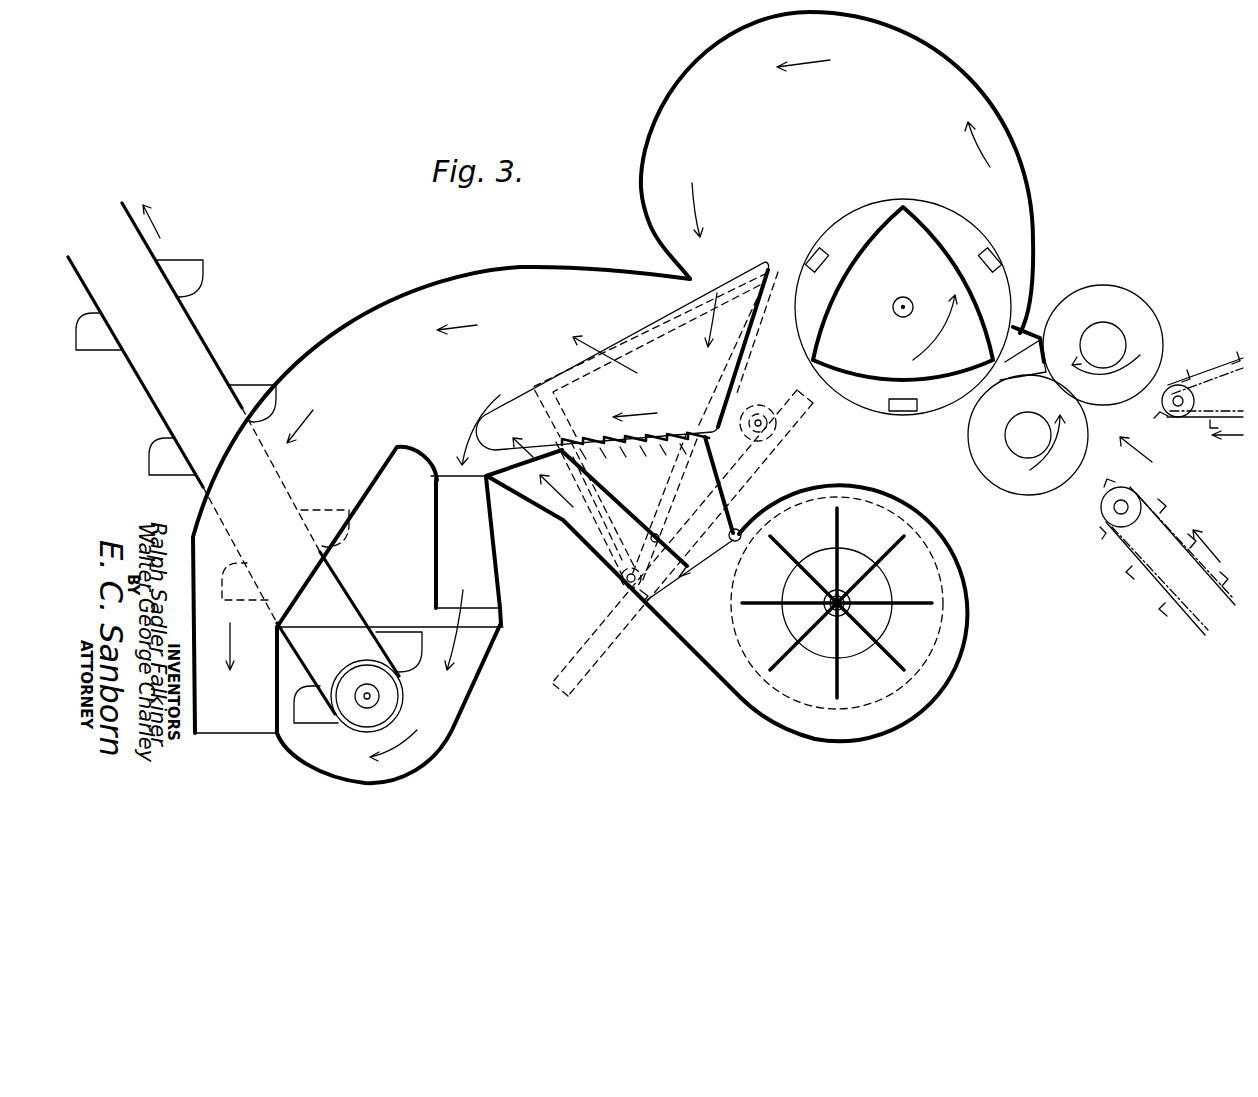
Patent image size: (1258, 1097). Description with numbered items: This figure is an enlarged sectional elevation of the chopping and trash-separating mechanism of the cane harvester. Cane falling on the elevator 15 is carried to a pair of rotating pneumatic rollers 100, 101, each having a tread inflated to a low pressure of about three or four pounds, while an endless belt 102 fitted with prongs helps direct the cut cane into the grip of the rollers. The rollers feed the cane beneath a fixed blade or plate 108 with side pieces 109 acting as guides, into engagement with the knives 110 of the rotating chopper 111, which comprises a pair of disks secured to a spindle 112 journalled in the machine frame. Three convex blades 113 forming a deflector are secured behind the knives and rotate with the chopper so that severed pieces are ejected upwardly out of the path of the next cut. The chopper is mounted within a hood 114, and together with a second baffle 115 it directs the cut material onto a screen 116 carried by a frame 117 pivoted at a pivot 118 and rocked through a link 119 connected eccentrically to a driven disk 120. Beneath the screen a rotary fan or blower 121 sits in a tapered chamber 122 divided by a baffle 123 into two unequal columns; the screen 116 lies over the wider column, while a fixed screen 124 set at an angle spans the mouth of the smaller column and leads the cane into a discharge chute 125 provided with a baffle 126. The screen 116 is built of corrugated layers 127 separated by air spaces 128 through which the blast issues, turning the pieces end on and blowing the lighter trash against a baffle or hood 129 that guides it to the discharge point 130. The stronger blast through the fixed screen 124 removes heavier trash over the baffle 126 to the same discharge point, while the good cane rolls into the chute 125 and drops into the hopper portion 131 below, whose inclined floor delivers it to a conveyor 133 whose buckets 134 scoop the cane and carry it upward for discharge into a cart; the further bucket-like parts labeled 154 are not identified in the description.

The elevator 15 is at (1158, 580).
The roller 100 is at (1123, 297).
The roller 101 is at (1038, 478).
The endless belt 102 is at (1197, 418).
The fixed blade or plate 108 is at (1032, 328).
The side pieces 109 is at (1023, 360).
The knives 110 is at (812, 255).
The rotating chopper 111 is at (940, 218).
The spindle 112 is at (904, 300).
The convex blades 113 is at (937, 235).
The hood 114 is at (985, 102).
The second baffle 115 is at (741, 355).
The screen 116 is at (583, 437).
The frame 117 is at (670, 487).
The pivot 118 is at (622, 583).
The link 119 is at (745, 415).
The disk 120 is at (760, 452).
The rotary fan or blower 121 is at (838, 680).
The tapered chamber 122 is at (706, 662).
The baffle 123 is at (683, 569).
The fixed screen 124 is at (530, 467).
The discharge chute 125 is at (466, 573).
The baffle 126 is at (357, 537).
The corrugated layers 127 is at (656, 446).
The air spaces 128 is at (652, 435).
The baffle or hood 129 is at (551, 267).
The discharge point 130 is at (236, 678).
The hopper portion 131 is at (390, 704).
The conveyor 133 is at (203, 337).
The buckets 134 is at (190, 260).
The buckets 154 is at (104, 345).